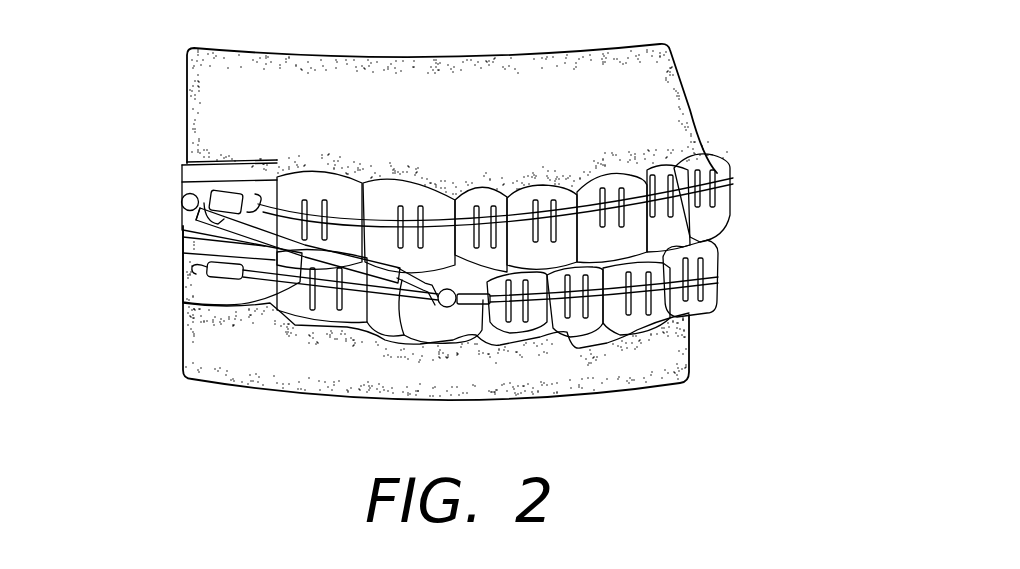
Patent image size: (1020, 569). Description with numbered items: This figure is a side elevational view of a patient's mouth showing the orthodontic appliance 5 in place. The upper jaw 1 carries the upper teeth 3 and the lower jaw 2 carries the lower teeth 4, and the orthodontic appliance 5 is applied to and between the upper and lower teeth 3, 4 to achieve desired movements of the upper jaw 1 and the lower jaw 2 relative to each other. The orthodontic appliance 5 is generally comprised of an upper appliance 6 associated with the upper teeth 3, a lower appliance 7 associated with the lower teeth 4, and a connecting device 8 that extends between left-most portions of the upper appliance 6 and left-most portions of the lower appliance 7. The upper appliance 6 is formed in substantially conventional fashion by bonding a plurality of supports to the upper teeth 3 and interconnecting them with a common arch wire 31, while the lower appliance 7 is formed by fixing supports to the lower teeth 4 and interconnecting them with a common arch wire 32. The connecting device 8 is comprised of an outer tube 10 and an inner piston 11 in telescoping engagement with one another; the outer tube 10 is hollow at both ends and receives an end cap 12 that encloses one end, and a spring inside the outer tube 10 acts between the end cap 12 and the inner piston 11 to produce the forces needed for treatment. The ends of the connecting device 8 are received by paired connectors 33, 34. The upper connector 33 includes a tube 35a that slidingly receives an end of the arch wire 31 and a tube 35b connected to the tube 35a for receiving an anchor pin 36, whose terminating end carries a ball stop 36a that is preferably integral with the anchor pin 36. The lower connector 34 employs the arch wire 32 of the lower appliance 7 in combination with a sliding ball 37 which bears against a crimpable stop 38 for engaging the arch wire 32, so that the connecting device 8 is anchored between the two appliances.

The upper jaw 1 is at (428, 90).
The lower jaw 2 is at (209, 366).
The upper teeth 3 is at (648, 175).
The lower teeth 4 is at (635, 328).
The orthodontic appliance 5 is at (152, 254).
The upper appliance 6 is at (457, 203).
The lower appliance 7 is at (369, 310).
The connecting device 8 is at (375, 258).
The outer tube 10 is at (296, 250).
The inner piston 11 is at (400, 283).
The end cap 12 is at (190, 214).
The arch wire 31 is at (733, 183).
The arch wire 32 is at (718, 277).
The connector 33 is at (207, 139).
The connector 34 is at (491, 369).
The tube 35a is at (237, 199).
The tube 35b is at (223, 206).
The anchor pin 36 is at (262, 203).
The ball stop 36a is at (187, 194).
The sliding ball 37 is at (447, 307).
The crimpable stop 38 is at (470, 305).